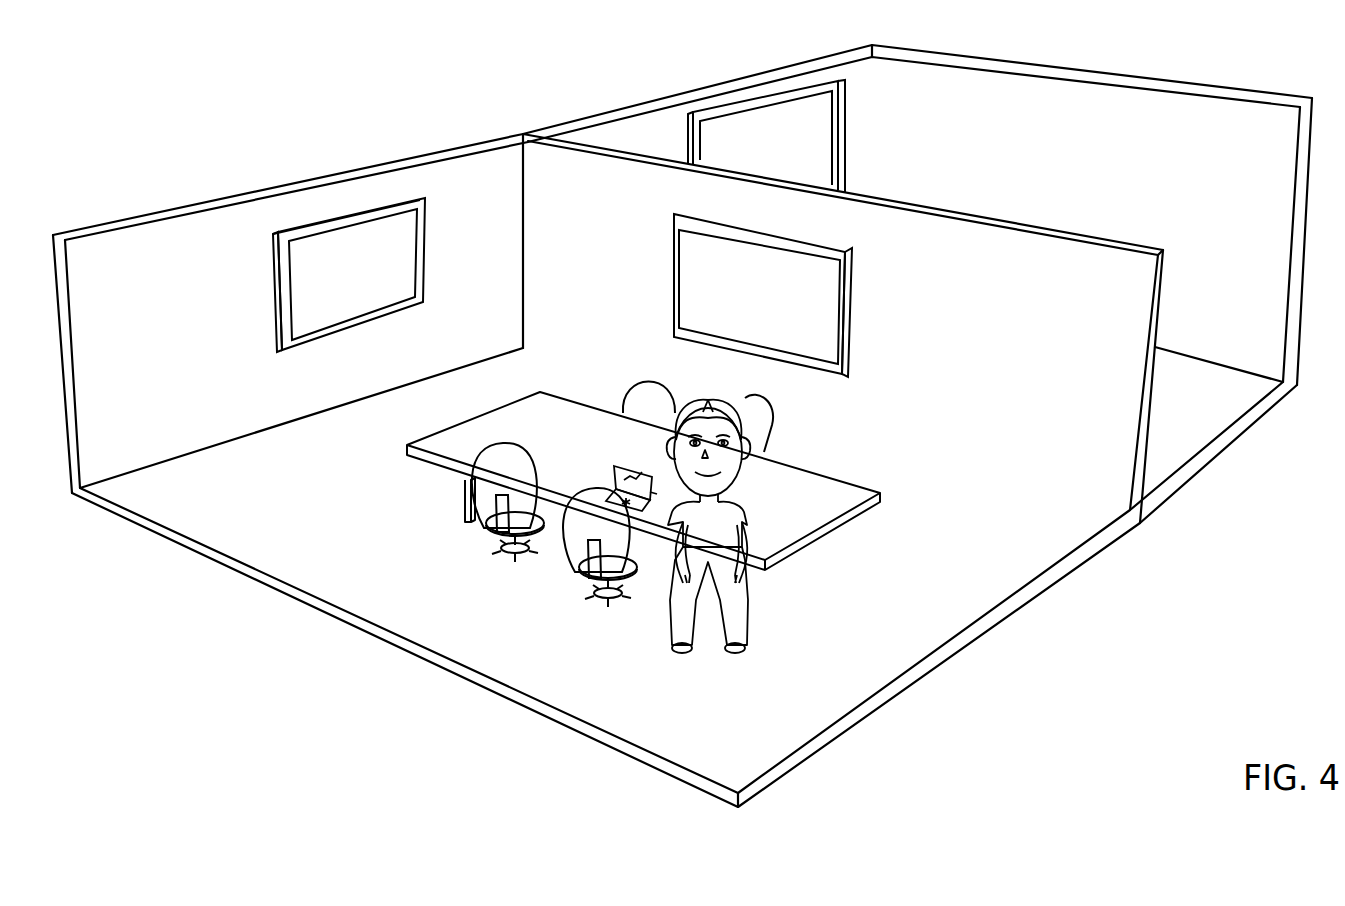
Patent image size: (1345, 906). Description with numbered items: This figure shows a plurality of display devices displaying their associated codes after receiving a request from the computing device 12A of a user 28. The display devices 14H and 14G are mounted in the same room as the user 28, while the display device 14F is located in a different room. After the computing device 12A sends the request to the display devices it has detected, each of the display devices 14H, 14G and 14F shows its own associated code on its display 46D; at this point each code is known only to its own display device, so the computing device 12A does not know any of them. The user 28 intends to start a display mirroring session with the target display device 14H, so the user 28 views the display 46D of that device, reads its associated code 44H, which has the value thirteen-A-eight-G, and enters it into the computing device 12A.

The target display device 14H is at (323, 275).
The associated code 44H is at (361, 246).
The display 46D is at (328, 334).
The display device 14F is at (688, 133).
The display device 14G is at (674, 284).
The computing device 12A is at (620, 469).
The user 28 is at (744, 594).